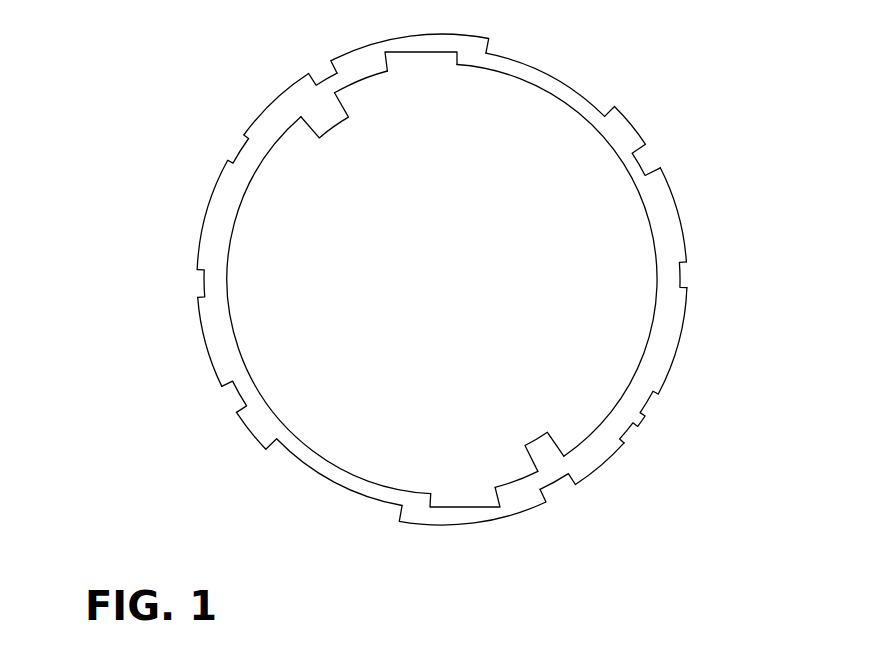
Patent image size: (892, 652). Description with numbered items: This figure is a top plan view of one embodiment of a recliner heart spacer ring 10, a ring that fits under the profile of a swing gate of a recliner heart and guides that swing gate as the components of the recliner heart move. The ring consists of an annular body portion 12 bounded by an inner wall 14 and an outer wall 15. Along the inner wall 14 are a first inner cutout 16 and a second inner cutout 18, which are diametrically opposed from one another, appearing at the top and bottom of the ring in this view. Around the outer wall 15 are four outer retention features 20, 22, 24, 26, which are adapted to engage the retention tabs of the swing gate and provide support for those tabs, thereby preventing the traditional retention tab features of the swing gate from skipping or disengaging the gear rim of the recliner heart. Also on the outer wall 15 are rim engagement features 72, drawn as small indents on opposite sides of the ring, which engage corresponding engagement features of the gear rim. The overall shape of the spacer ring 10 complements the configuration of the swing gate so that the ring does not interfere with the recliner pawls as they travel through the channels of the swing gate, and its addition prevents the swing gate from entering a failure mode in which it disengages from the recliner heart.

The recliner heart spacer ring 10 is at (634, 82).
The body portion 12 is at (648, 367).
The inner wall 14 is at (650, 220).
The outer wall 15 is at (683, 213).
The first inner cutout 16 is at (415, 52).
The second inner cutout 18 is at (462, 507).
The outer retention feature 20 is at (323, 82).
The outer retention feature 22 is at (645, 163).
The outer retention feature 24 is at (560, 483).
The outer retention feature 26 is at (238, 393).
The rim engagement feature 72 is at (683, 277).